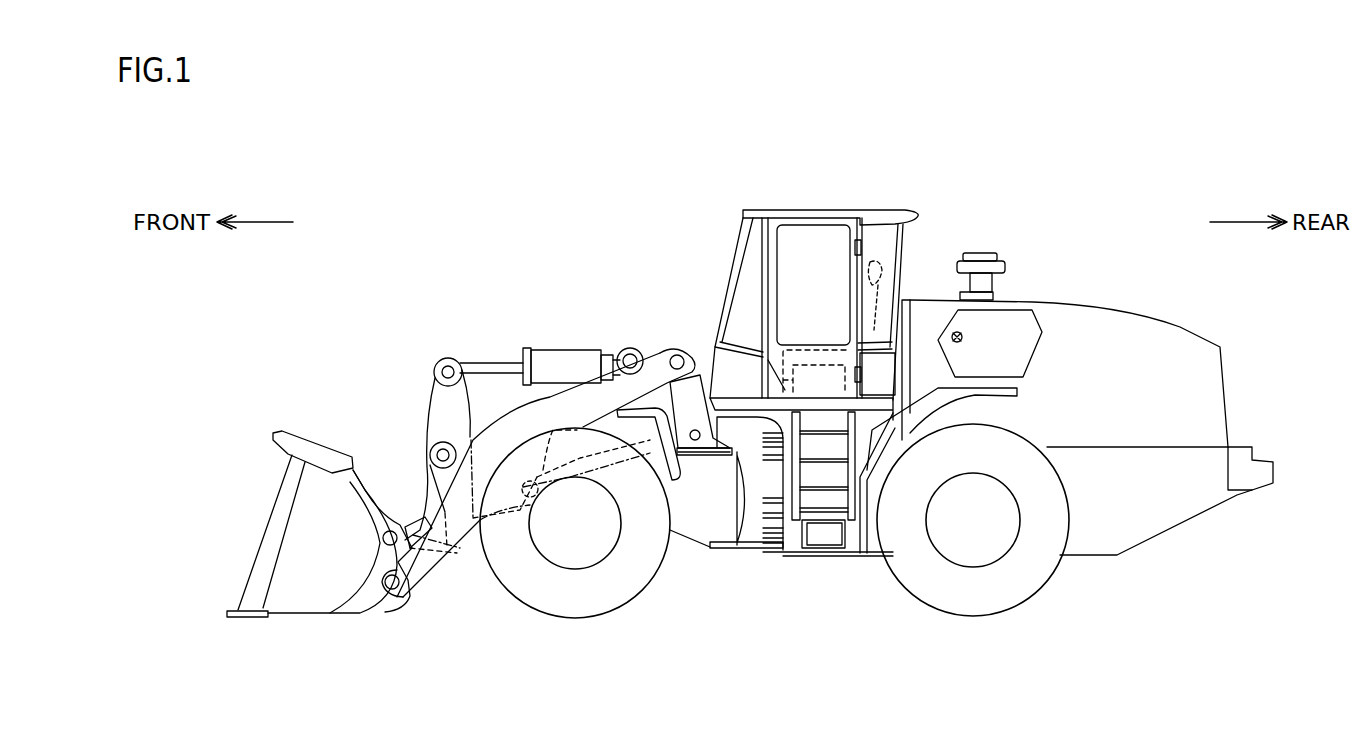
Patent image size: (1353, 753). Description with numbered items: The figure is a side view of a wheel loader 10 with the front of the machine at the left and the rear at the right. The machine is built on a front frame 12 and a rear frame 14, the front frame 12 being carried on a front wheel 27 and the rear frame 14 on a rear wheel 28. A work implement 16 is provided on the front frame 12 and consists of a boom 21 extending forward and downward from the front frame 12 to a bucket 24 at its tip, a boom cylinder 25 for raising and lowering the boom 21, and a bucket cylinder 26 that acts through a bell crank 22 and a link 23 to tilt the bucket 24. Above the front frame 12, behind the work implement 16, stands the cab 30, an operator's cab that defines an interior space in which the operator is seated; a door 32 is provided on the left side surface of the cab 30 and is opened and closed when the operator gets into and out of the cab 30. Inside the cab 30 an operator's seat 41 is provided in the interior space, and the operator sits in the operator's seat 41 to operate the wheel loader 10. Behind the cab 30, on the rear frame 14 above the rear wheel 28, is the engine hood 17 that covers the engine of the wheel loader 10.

The wheel loader 10 is at (458, 178).
The front frame 12 is at (687, 520).
The rear frame 14 is at (873, 527).
The work implement 16 is at (431, 338).
The engine hood 17 is at (1163, 323).
The boom 21 is at (588, 400).
The bell crank 22 is at (447, 420).
The link 23 is at (410, 533).
The bucket 24 is at (317, 547).
The boom cylinder 25 is at (650, 448).
The bucket cylinder 26 is at (553, 367).
The front wheel 27 is at (572, 587).
The rear wheel 28 is at (973, 587).
The cab 30 is at (751, 206).
The door 32 is at (808, 220).
The operator's seat 41 is at (874, 262).